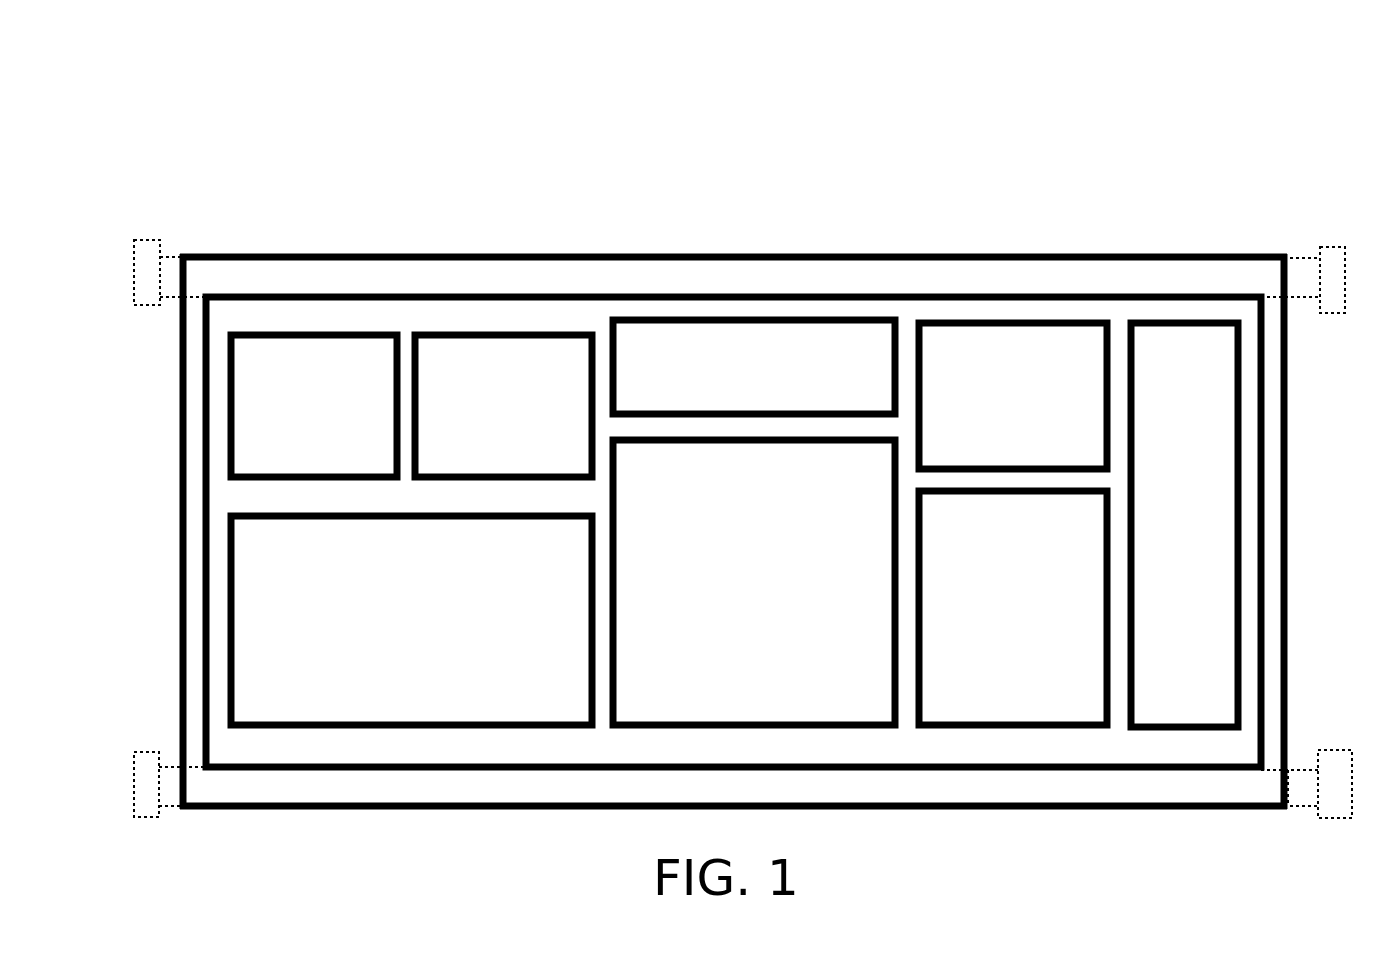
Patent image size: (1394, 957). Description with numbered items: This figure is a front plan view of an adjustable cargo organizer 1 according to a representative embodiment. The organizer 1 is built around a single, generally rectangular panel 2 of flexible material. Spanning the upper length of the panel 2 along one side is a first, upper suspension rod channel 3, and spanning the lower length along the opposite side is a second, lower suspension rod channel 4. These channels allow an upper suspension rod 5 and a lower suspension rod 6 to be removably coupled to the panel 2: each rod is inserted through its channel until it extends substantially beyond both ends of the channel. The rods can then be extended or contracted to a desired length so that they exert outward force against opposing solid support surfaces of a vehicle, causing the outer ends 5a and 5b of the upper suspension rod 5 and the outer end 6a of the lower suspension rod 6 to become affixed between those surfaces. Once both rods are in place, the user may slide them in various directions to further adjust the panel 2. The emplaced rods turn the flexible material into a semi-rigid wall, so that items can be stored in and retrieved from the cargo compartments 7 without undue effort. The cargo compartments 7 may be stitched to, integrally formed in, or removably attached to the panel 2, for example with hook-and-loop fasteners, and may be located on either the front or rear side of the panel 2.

The adjustable cargo organizer 1 is at (185, 153).
The panel 2 is at (720, 255).
The upper suspension rod channel 3 is at (1003, 278).
The lower suspension rod channel 4 is at (960, 793).
The upper suspension rod 5 is at (1305, 257).
The outer end of upper suspension rod 5a is at (1332, 247).
The outer end of upper suspension rod 5b is at (147, 240).
The lower suspension rod 6 is at (1305, 808).
The outer end of lower suspension rod 6a is at (146, 752).
The cargo compartments 7 is at (310, 331).